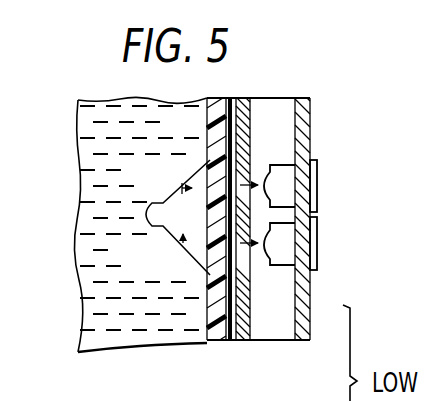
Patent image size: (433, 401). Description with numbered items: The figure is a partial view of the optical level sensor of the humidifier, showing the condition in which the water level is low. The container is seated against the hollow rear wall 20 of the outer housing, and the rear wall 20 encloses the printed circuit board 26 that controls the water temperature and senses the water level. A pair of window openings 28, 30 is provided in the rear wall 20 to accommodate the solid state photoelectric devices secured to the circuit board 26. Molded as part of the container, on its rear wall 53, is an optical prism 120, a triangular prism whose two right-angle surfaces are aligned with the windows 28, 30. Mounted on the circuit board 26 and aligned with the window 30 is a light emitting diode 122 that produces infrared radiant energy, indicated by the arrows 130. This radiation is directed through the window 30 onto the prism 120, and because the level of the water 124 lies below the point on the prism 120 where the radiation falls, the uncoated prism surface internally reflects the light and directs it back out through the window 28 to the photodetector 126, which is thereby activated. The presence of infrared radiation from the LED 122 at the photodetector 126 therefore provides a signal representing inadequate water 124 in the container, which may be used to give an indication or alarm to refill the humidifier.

The hollow rear wall 20 is at (246, 119).
The printed circuit board 26 is at (302, 322).
The window opening 28 is at (245, 180).
The window opening 30 is at (245, 252).
The rear wall of the container 53 is at (208, 116).
The optical prism 120 is at (178, 240).
The light emitting diode 122 is at (282, 248).
The water 124 is at (90, 333).
The photodetector 126 is at (282, 189).
The infrared radiant energy 130 is at (182, 189).